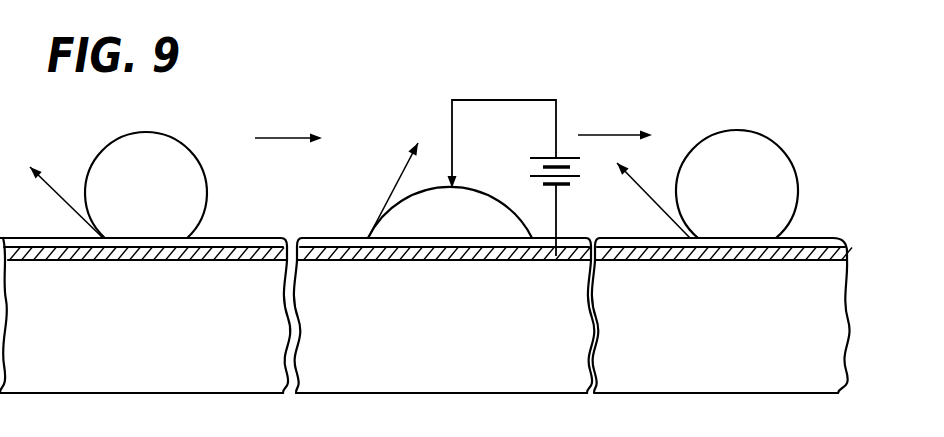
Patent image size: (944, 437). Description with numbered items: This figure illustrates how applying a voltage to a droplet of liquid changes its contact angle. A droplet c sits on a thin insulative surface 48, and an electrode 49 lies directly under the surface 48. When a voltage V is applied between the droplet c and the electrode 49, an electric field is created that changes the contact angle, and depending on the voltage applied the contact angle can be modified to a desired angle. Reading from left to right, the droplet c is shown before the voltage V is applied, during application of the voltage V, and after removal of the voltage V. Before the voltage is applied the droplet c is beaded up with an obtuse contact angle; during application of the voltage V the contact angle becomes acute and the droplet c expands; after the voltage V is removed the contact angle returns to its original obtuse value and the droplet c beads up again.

The thin insulative surface 48 is at (208, 243).
The electrode 49 is at (293, 243).
The droplet c is at (150, 133).
The voltage V is at (525, 178).